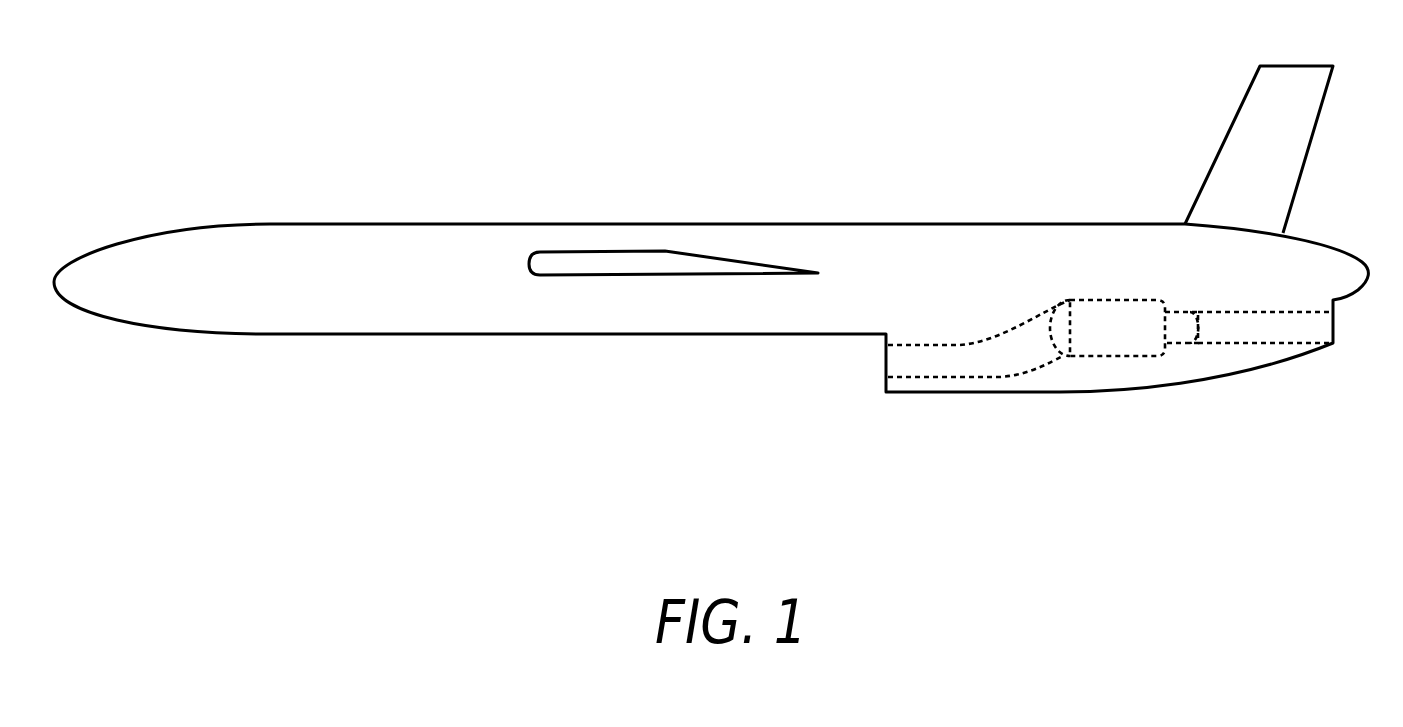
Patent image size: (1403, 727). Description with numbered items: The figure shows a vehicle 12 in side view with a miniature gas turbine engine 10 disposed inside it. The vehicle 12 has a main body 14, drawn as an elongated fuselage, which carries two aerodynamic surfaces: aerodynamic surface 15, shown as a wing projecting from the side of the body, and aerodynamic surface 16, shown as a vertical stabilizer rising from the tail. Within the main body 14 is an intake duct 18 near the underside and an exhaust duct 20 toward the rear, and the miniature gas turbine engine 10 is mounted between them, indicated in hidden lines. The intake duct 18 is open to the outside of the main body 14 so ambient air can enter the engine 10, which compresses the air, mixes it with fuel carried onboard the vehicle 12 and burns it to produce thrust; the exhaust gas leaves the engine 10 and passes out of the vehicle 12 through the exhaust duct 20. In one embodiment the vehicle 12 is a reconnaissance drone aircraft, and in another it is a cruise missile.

The miniature gas turbine engine 10 is at (1108, 323).
The vehicle 12 is at (711, 280).
The main body 14 is at (340, 224).
The aerodynamic surface 15 is at (615, 275).
The aerodynamic surface 16 is at (1287, 165).
The intake duct 18 is at (967, 362).
The exhaust duct 20 is at (1248, 343).